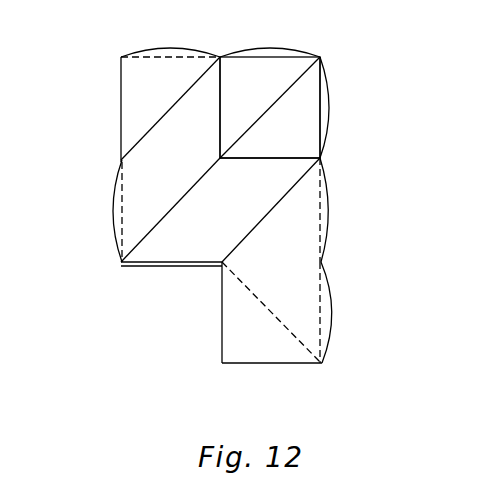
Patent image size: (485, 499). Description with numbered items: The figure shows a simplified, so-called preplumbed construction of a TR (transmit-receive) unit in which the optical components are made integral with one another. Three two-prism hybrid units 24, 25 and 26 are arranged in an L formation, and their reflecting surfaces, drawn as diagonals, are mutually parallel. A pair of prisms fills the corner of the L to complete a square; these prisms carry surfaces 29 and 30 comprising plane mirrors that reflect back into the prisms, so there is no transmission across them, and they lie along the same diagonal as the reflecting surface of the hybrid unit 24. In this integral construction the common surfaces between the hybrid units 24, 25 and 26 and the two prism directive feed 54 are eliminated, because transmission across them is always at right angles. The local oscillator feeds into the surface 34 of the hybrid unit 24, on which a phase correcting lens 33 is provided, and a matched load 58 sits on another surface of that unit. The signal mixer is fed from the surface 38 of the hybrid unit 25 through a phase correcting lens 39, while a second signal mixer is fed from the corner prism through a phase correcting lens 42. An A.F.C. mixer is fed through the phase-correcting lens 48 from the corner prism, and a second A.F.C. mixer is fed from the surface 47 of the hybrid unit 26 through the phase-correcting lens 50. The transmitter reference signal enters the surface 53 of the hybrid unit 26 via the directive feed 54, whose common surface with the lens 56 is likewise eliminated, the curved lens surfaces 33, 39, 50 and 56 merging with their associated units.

The hybrid unit 24 is at (136, 251).
The hybrid unit 25 is at (138, 143).
The hybrid unit 26 is at (312, 166).
The surface 29 is at (308, 55).
The surface 30 is at (312, 68).
The phase correcting lens 33 is at (116, 221).
The surface 34 is at (123, 203).
The surface 38 is at (151, 58).
The phase correcting lens 39 is at (166, 50).
The phase correcting lens 42 is at (266, 50).
The surface 47 is at (325, 197).
The phase-correcting lens 48 is at (327, 108).
The phase-correcting lens 50 is at (326, 232).
The surface 53 is at (331, 293).
The two prism directive feed 54 is at (312, 363).
The lens 56 is at (329, 322).
The matched load 58 is at (170, 267).